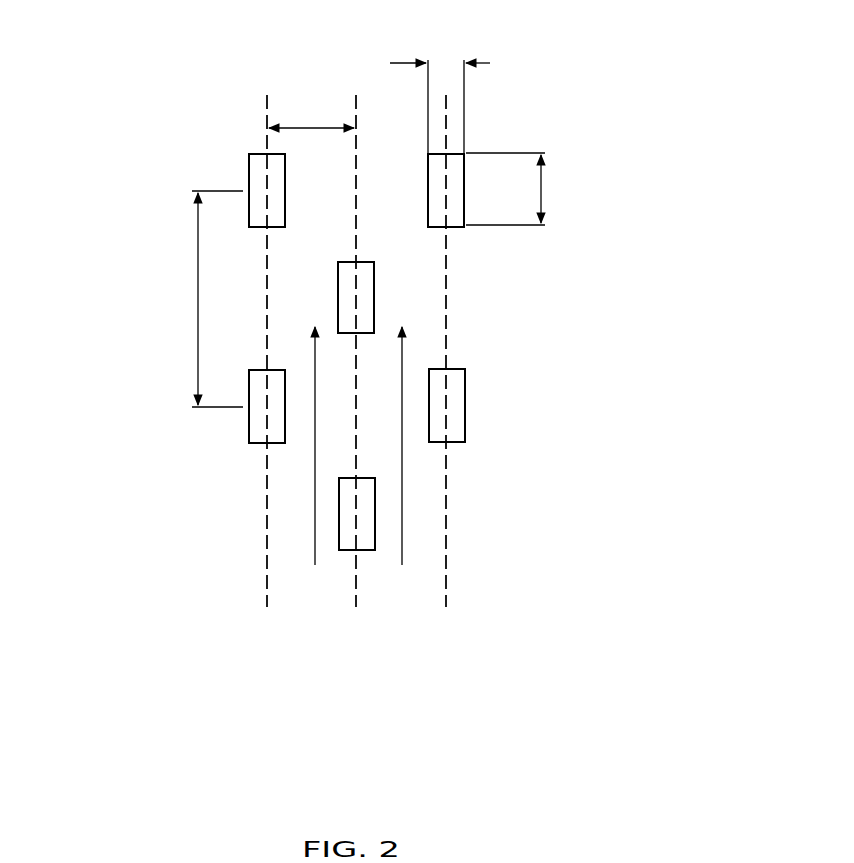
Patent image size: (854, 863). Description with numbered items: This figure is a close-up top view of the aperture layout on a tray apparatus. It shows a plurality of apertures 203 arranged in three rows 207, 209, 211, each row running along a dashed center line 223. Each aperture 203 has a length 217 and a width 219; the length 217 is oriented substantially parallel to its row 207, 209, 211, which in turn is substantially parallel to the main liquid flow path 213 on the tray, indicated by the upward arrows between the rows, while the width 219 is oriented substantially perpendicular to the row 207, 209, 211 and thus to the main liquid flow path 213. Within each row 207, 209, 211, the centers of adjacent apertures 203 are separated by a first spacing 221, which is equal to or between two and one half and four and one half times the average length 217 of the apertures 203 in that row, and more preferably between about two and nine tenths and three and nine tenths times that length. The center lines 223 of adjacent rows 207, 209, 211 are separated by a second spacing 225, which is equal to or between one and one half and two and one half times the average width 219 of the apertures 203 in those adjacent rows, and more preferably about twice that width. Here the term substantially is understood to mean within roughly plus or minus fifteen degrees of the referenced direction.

The apertures 203 is at (460, 369).
The row 207 is at (268, 621).
The row 209 is at (356, 621).
The row 211 is at (447, 621).
The main liquid flow path 213 is at (315, 475).
The length 217 is at (541, 188).
The width 219 is at (490, 63).
The first spacing 221 is at (198, 298).
The center lines 223 is at (446, 112).
The second spacing 225 is at (305, 128).